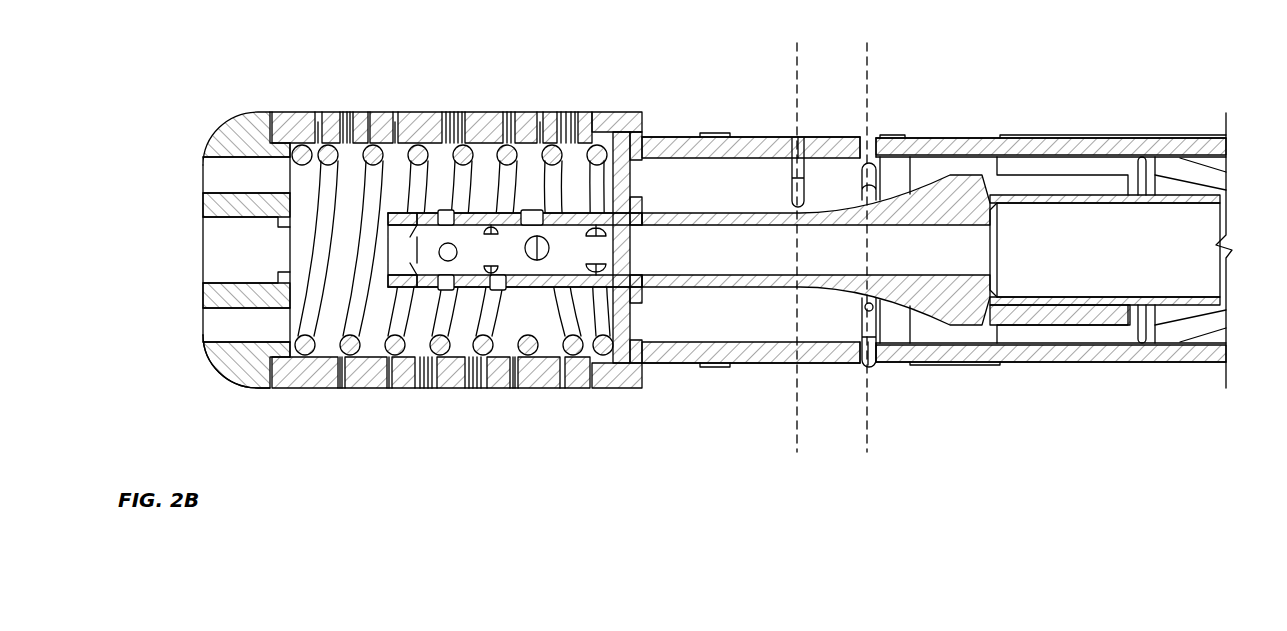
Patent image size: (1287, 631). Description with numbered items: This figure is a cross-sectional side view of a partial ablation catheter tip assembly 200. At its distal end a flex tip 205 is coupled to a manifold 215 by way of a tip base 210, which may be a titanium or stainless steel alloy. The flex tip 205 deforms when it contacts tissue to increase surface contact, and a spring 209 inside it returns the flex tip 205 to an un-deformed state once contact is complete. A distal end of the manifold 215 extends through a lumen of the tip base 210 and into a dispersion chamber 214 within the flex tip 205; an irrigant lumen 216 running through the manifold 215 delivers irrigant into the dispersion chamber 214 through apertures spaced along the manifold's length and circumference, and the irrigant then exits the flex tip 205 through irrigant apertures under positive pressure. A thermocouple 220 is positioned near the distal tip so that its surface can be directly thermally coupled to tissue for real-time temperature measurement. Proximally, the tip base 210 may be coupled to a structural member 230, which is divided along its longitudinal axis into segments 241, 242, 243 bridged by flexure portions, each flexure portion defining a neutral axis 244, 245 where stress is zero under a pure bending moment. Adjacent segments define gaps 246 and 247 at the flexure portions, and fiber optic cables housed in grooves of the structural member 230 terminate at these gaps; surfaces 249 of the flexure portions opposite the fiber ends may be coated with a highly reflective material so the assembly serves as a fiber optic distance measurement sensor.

The partial ablation catheter tip assembly 200 is at (457, 40).
The flex tip 205 is at (420, 100).
The spring 209 is at (366, 320).
The tip base 210 is at (608, 165).
The dispersion chamber 214 is at (232, 380).
The manifold 215 is at (980, 205).
The irrigant lumen 216 is at (1085, 240).
The thermocouple 220 is at (232, 247).
The structural member 230 is at (922, 378).
The segment 241 is at (712, 378).
The intermediate segment 242 is at (836, 376).
The proximal segment 243 is at (980, 376).
The neutral axis 244 is at (797, 435).
The neutral axis 245 is at (870, 433).
The gap 246 is at (790, 137).
The gap 247 is at (876, 345).
The surfaces of the flexure portions 249 is at (860, 323).